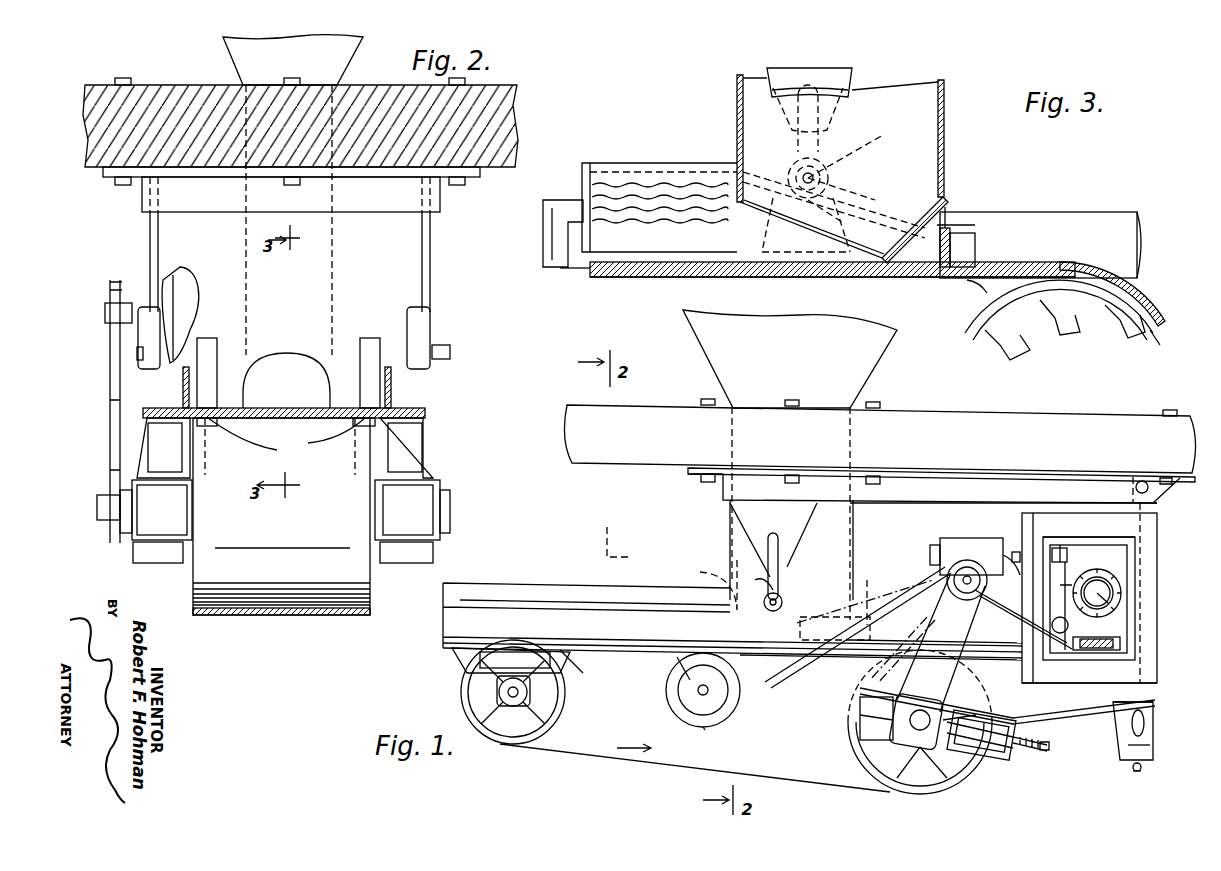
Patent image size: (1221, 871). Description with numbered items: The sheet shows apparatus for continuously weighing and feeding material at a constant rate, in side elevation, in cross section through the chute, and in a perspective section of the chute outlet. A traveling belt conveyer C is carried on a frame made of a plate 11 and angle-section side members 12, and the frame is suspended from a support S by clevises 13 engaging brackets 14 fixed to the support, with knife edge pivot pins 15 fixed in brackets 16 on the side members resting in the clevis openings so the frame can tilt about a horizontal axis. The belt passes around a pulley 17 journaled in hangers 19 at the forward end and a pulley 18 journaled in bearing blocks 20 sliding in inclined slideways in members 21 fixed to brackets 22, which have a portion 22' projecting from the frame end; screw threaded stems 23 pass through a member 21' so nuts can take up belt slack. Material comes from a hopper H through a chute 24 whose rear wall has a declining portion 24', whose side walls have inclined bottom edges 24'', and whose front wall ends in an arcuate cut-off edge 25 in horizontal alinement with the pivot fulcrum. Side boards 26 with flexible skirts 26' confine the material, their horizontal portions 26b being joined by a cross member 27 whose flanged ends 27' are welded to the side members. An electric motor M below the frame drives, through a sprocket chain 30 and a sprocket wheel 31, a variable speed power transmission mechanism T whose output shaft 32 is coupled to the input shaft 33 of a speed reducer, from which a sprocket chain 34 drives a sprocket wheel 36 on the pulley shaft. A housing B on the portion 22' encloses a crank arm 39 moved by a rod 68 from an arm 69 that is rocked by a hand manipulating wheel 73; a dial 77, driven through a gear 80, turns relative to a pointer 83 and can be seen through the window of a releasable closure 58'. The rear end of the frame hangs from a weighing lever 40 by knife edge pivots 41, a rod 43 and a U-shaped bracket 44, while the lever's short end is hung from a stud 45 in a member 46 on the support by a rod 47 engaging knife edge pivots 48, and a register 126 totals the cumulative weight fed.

In FIG. 3, the plate 11 is at (930, 278).
In FIG. 1, the plate 11 is at (632, 650).
In FIG. 2, the side members 12 is at (186, 398).
In FIG. 3, the side members 12 is at (543, 210).
In FIG. 1, the side members 12 is at (570, 610).
In FIG. 2, the clevises 13 is at (190, 300).
In FIG. 3, the clevises 13 is at (820, 140).
In FIG. 1, the clevises 13 is at (785, 565).
In FIG. 2, the brackets 14 is at (158, 240).
In FIG. 3, the brackets 14 is at (840, 85).
In FIG. 1, the brackets 14 is at (795, 532).
In FIG. 2, the knife edge pivot pins 15 is at (130, 345).
In FIG. 3, the knife edge pivot pins 15 is at (860, 159).
In FIG. 1, the knife edge pivot pins 15 is at (791, 575).
In FIG. 2, the brackets 16 is at (160, 392).
In FIG. 3, the brackets 16 is at (760, 235).
In FIG. 1, the brackets 16 is at (760, 628).
In FIG. 1, the pulley 17 is at (565, 720).
In FIG. 3, the pulley 18 is at (1075, 300).
In FIG. 1, the pulley 18 is at (860, 755).
In FIG. 1, the hangers 19 is at (470, 655).
In FIG. 2, the bearing blocks 20 is at (286, 510).
In FIG. 1, the bearing blocks 20 is at (905, 748).
In FIG. 2, the members 21 is at (265, 499).
In FIG. 1, the members 21 is at (980, 764).
In FIG. 1, the member 21' is at (997, 757).
In FIG. 2, the brackets 22 is at (285, 448).
In FIG. 1, the brackets 22 is at (881, 680).
In FIG. 1, the portion 22' is at (1007, 715).
In FIG. 1, the screw threaded stems 23 is at (1040, 752).
In FIG. 2, the outlet member or chute 24 is at (291, 220).
In FIG. 3, the outlet member or chute 24 is at (867, 169).
In FIG. 1, the outlet member or chute 24 is at (814, 513).
In FIG. 3, the declining portion of rear wall 24' is at (834, 205).
In FIG. 1, the declining portion of rear wall 24' is at (835, 610).
In FIG. 3, the bottom edge of side walls 24'' is at (806, 226).
In FIG. 1, the bottom edge of side walls 24'' is at (758, 589).
In FIG. 2, the bottom edge of front wall 25 is at (278, 355).
In FIG. 3, the bottom edge of front wall 25 is at (775, 190).
In FIG. 1, the bottom edge of front wall 25 is at (720, 600).
In FIG. 2, the side boards 26 is at (288, 355).
In FIG. 3, the side boards 26 is at (659, 191).
In FIG. 1, the side boards 26 is at (595, 578).
In FIG. 3, the skirt 26' is at (574, 293).
In FIG. 3, the horizontal portion of side boards 26b is at (935, 215).
In FIG. 1, the horizontal portion of side boards 26b is at (880, 594).
In FIG. 2, the cross member 27 is at (286, 441).
In FIG. 3, the cross member 27 is at (984, 247).
In FIG. 3, the flanged ends of cross member 27' is at (998, 224).
In FIG. 1, the flanged ends of cross member 27' is at (865, 601).
In FIG. 1, the sprocket chain 30 is at (755, 725).
In FIG. 1, the sprocket wheel 31 is at (960, 565).
In FIG. 1, the output shaft 32 is at (980, 600).
In FIG. 1, the input shaft 33 is at (1000, 548).
In FIG. 2, the sprocket chain 34 is at (108, 450).
In FIG. 1, the sprocket chain 34 is at (1010, 560).
In FIG. 2, the sprocket wheel 36 is at (108, 540).
In FIG. 1, the sprocket wheel 36 is at (907, 651).
In FIG. 1, the crank arm 39 is at (1062, 545).
In FIG. 1, the weighing lever 40 is at (1145, 725).
In FIG. 1, the knife edge pivots 41 is at (1133, 768).
In FIG. 1, the rod 43 is at (1150, 748).
In FIG. 2, the U-shaped bracket 44 is at (283, 563).
In FIG. 1, the U-shaped bracket 44 is at (1118, 740).
In FIG. 1, the stud 45 is at (1135, 490).
In FIG. 1, the member 46 is at (1003, 492).
In FIG. 1, the rod 47 is at (1157, 672).
In FIG. 1, the knife edge pivots 48 is at (1152, 706).
In FIG. 1, the releasable closure 58' is at (1121, 553).
In FIG. 1, the rod 68 is at (1068, 552).
In FIG. 1, the arm 69 is at (1062, 633).
In FIG. 1, the hand manipulating wheel 73 is at (1115, 597).
In FIG. 1, the dial 77 is at (1120, 585).
In FIG. 1, the gear 80 is at (1110, 605).
In FIG. 1, the pointer 83 is at (1070, 585).
In FIG. 1, the register 126 is at (1095, 650).
In FIG. 2, the receptacle or hopper H is at (352, 60).
In FIG. 3, the receptacle or hopper H is at (809, 82).
In FIG. 1, the receptacle or hopper H is at (880, 370).
In FIG. 1, the support S is at (879, 436).
In FIG. 3, the traveling belt conveyer C is at (880, 278).
In FIG. 1, the traveling belt conveyer C is at (595, 760).
In FIG. 1, the electric motor M is at (705, 727).
In FIG. 1, the variable speed power transmission mechanism T is at (975, 543).
In FIG. 1, the housing B is at (1157, 538).